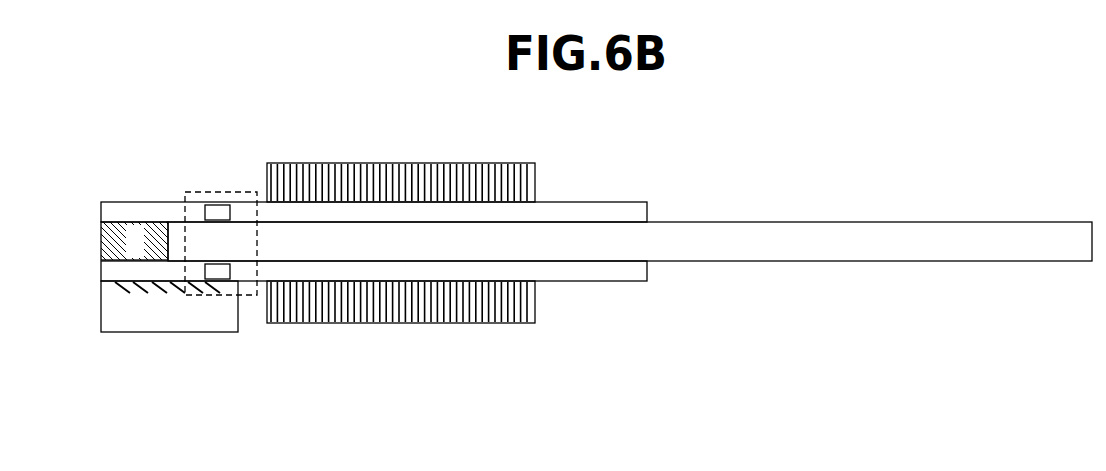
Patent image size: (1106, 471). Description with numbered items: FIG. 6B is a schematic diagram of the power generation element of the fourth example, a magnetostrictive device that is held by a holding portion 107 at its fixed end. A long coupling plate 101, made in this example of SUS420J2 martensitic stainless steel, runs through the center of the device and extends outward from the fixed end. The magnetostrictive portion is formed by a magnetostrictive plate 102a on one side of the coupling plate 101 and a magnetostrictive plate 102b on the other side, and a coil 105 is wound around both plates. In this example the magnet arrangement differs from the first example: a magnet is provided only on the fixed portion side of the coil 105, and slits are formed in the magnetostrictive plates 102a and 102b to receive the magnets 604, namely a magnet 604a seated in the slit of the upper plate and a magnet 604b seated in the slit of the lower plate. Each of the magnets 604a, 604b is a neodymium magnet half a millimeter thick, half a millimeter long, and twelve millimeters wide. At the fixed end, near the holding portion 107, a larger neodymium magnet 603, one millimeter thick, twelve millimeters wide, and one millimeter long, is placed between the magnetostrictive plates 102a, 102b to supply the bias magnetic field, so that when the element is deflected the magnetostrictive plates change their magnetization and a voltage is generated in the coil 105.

The coupling plate 101 is at (858, 232).
The magnetostrictive plate 102a is at (603, 201).
The magnetostrictive plate 102b is at (600, 282).
The coil 105 is at (414, 163).
The holding portion 107 is at (124, 320).
The magnet 603 is at (120, 221).
The magnets 604 is at (247, 166).
The magnet 604a is at (188, 198).
The magnet 604b is at (207, 282).